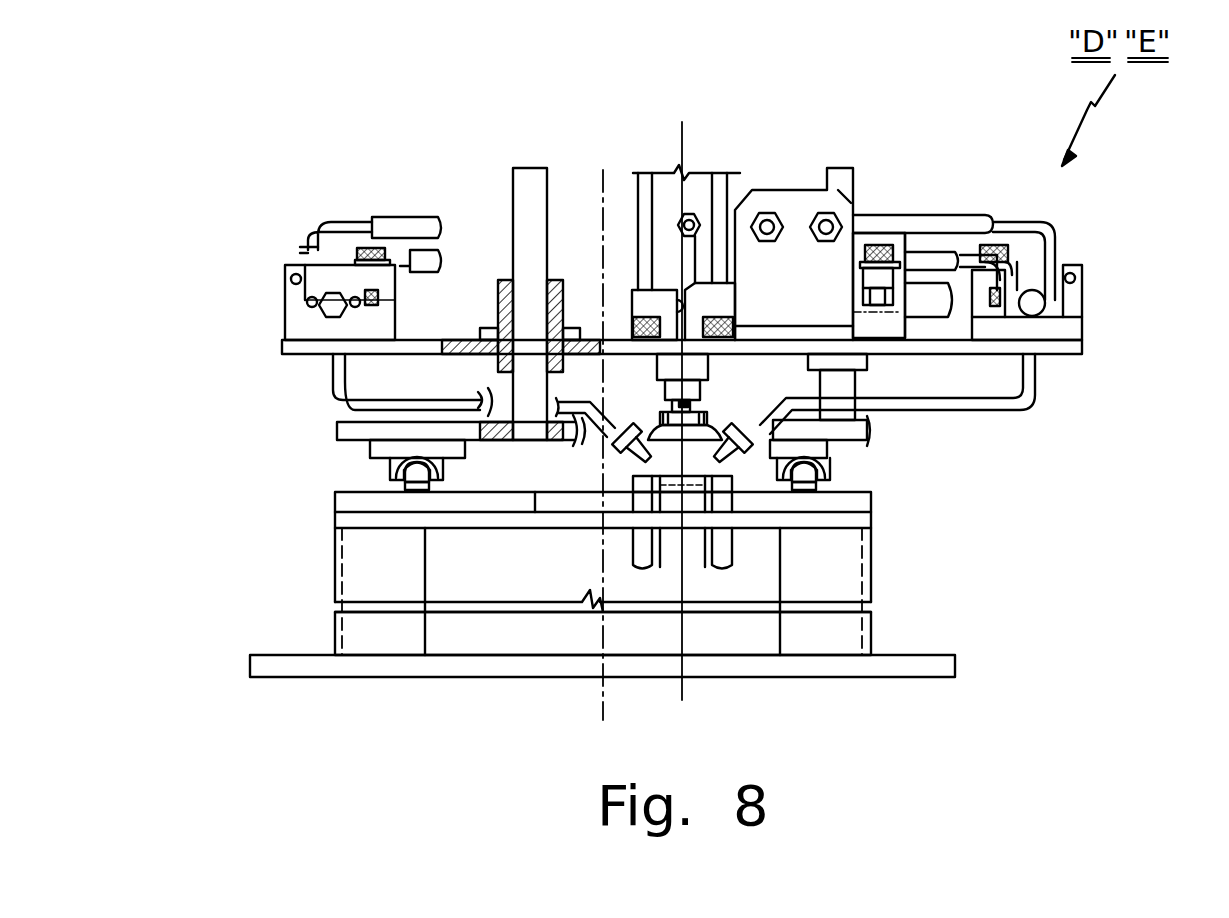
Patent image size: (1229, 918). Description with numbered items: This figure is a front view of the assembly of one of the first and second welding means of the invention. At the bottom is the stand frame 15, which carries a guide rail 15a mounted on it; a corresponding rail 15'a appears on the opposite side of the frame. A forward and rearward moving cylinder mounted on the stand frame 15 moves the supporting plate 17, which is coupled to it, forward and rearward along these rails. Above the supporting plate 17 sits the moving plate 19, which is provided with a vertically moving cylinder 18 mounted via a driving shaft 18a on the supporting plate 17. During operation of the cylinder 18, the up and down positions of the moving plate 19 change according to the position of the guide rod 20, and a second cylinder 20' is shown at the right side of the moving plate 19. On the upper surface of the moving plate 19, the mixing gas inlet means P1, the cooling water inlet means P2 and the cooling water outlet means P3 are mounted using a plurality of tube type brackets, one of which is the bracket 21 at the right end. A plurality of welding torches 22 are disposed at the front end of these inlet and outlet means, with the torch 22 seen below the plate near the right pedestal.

The stand frame 15 is at (549, 576).
The guide rail 15a is at (400, 483).
The support pedestal 15'a is at (925, 483).
The supporting plate 17 is at (337, 433).
The vertically moving cylinder 18 is at (670, 190).
The driving shaft 18a is at (667, 370).
The moving plate 19 is at (1057, 343).
The guide rod 20 is at (507, 273).
The cylinder 20' is at (954, 238).
The tube type bracket 21 is at (1085, 300).
The welding torch 22 is at (870, 438).
The mixing gas inlet means P1 is at (685, 210).
The cooling water inlet means P2 is at (830, 210).
The cooling water outlet means P3 is at (770, 210).